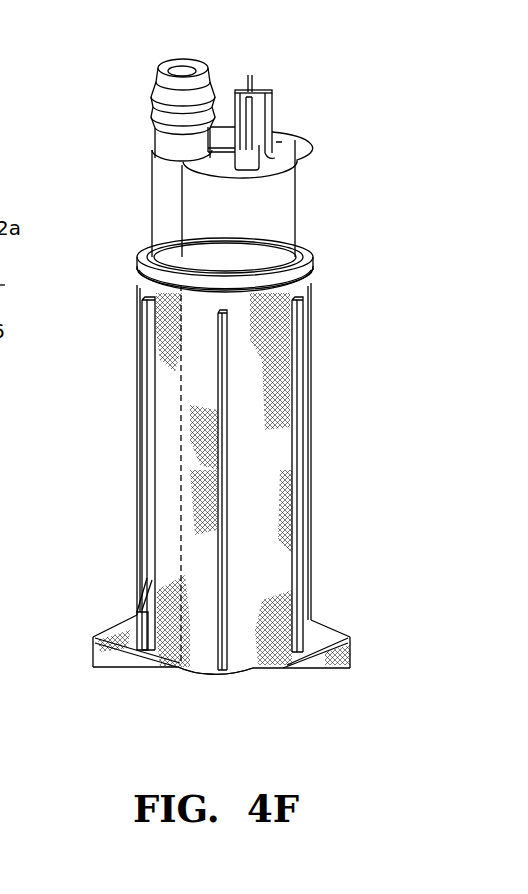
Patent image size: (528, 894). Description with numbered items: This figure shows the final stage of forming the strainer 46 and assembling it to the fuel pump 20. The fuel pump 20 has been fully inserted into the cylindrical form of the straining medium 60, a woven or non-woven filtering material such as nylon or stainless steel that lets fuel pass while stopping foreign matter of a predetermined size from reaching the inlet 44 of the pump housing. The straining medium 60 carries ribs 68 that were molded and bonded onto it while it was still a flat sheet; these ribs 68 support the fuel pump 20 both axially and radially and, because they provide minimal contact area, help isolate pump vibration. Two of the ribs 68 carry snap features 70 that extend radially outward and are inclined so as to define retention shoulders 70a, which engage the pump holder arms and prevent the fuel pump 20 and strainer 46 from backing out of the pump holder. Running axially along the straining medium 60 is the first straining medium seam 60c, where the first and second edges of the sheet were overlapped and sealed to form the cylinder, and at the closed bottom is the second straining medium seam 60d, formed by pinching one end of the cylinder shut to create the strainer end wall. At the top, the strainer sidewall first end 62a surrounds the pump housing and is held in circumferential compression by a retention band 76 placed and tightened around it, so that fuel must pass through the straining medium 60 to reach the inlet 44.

The inlet 44 is at (176, 72).
The fuel pump 20 is at (308, 228).
The strainer sidewall first end 62a is at (304, 268).
The retention band 76 is at (305, 276).
The ribs 68 is at (148, 314).
The strainer 46 is at (314, 356).
The snap features 70 is at (142, 592).
The retention shoulders 70a is at (138, 618).
The straining medium 60 is at (238, 660).
The first straining medium seam 60c is at (180, 668).
The second straining medium seam 60d is at (135, 668).